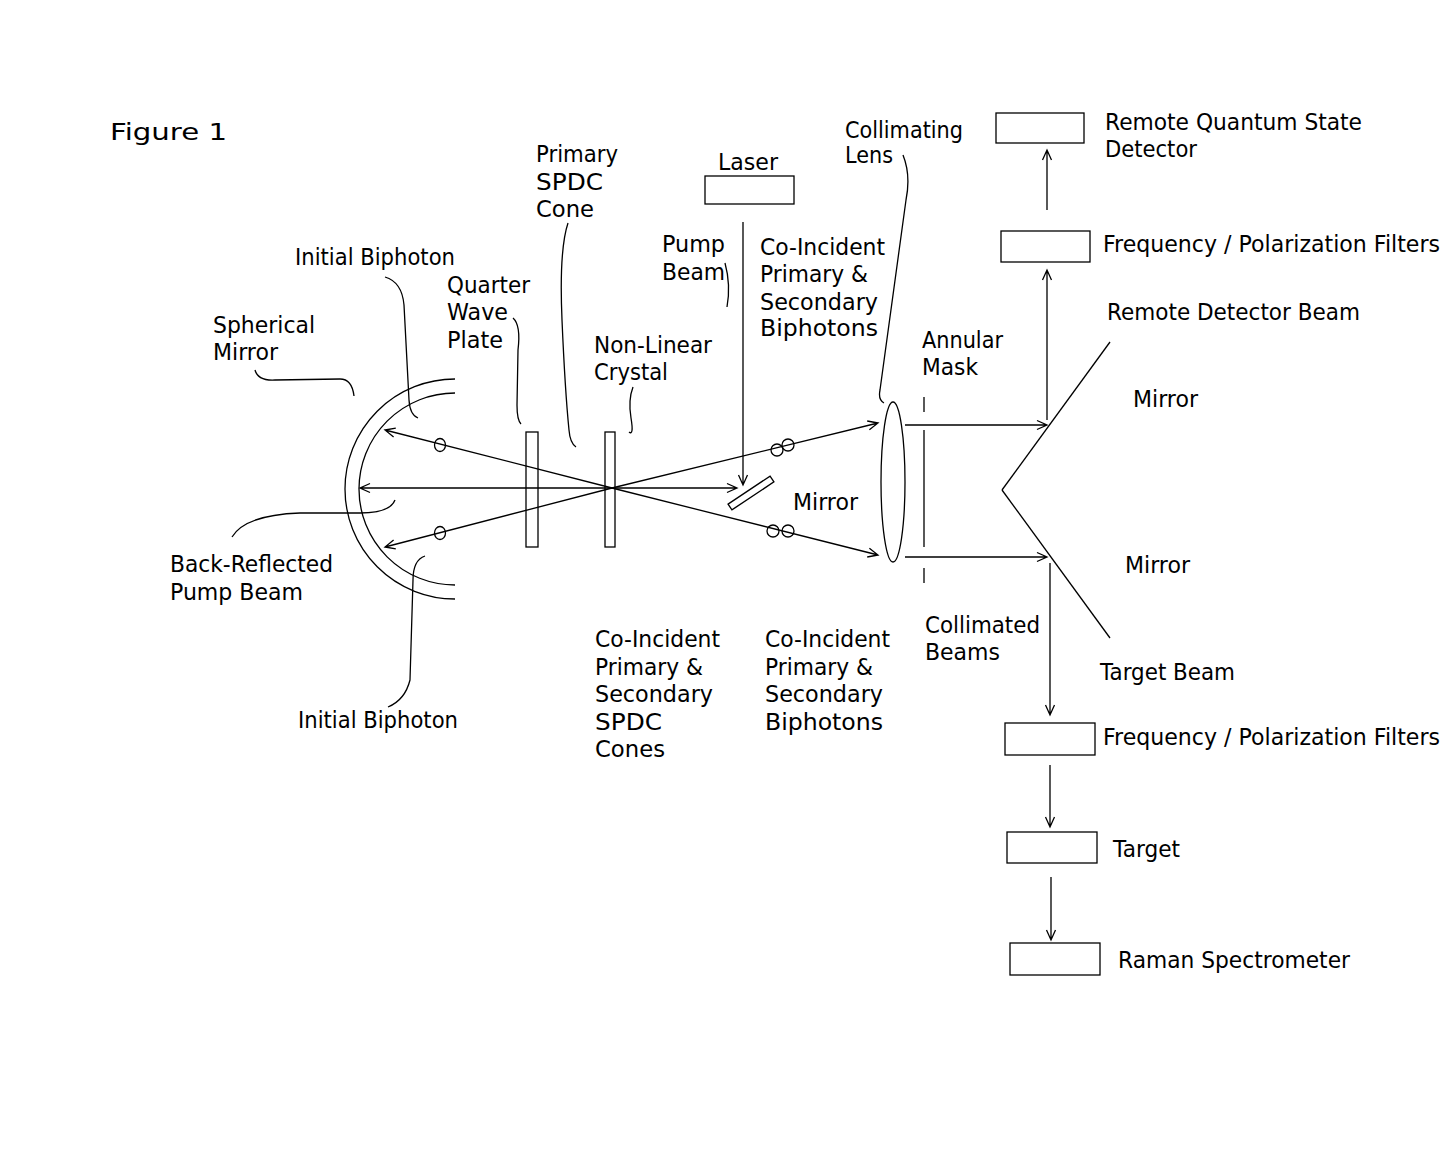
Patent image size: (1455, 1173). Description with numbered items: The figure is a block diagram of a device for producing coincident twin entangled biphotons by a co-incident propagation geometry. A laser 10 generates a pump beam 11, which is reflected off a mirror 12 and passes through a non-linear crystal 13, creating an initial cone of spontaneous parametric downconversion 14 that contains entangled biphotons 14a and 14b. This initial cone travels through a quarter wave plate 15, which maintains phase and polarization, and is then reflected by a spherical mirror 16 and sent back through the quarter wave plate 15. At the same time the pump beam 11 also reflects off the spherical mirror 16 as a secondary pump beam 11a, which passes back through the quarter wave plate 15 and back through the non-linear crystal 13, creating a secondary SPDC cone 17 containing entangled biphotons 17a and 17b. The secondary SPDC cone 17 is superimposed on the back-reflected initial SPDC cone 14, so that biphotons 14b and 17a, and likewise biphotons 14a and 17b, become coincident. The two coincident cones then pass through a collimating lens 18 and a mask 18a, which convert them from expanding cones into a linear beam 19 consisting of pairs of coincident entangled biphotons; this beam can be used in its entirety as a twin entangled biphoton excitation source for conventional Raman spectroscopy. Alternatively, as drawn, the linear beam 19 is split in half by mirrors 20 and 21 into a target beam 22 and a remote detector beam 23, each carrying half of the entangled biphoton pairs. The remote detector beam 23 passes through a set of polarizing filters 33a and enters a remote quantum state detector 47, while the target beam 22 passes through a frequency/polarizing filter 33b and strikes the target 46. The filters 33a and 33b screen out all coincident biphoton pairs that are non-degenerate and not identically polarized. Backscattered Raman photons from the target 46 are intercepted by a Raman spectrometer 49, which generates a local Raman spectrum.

The laser 10 is at (749, 190).
The pump beam 11 is at (733, 353).
The secondary pump beam 11a is at (548, 479).
The mirror 12 is at (775, 486).
The non-linear crystal 13 is at (627, 489).
The initial cone of spontaneous parametric downconversion 14 is at (498, 488).
The entangled biphoton 14a is at (778, 605).
The entangled biphoton 14b is at (780, 376).
The quarter wave plate 15 is at (537, 478).
The spherical mirror 16 is at (400, 489).
The secondary SPDC 17 is at (661, 620).
The entangled biphoton 17a is at (790, 439).
The entangled biphoton 17b is at (790, 538).
The collimating lens 18 is at (897, 482).
The mask 18a is at (943, 481).
The linear beam 19 is at (958, 610).
The mirror 20 is at (1058, 564).
The mirror 21 is at (1062, 416).
The target beam 22 is at (1068, 639).
The remote detector beam 23 is at (1068, 345).
The polarizing filters 33a is at (1045, 246).
The frequency/polarizing filter 33b is at (1050, 739).
The target 46 is at (1052, 847).
The remote quantum state detector 47 is at (1040, 128).
The Raman spectrometer 49 is at (1055, 959).